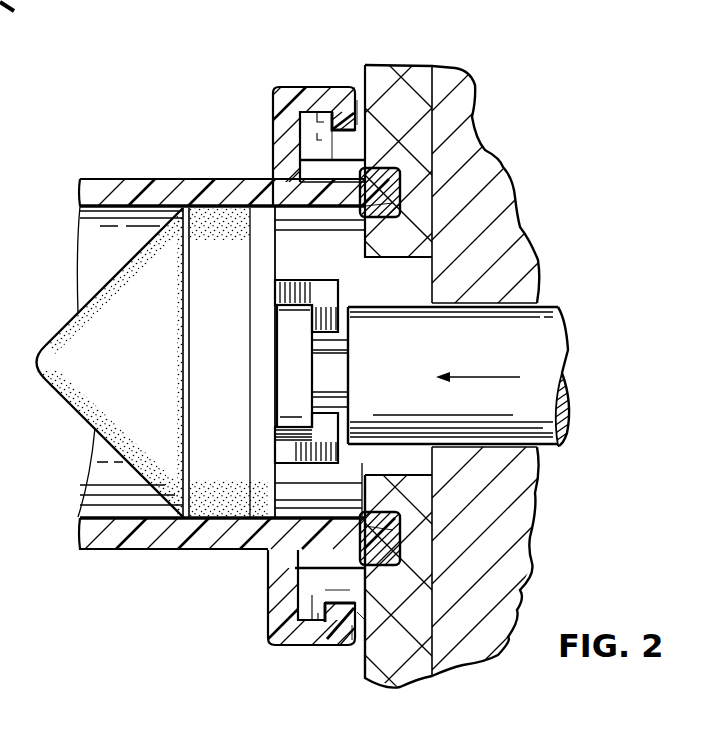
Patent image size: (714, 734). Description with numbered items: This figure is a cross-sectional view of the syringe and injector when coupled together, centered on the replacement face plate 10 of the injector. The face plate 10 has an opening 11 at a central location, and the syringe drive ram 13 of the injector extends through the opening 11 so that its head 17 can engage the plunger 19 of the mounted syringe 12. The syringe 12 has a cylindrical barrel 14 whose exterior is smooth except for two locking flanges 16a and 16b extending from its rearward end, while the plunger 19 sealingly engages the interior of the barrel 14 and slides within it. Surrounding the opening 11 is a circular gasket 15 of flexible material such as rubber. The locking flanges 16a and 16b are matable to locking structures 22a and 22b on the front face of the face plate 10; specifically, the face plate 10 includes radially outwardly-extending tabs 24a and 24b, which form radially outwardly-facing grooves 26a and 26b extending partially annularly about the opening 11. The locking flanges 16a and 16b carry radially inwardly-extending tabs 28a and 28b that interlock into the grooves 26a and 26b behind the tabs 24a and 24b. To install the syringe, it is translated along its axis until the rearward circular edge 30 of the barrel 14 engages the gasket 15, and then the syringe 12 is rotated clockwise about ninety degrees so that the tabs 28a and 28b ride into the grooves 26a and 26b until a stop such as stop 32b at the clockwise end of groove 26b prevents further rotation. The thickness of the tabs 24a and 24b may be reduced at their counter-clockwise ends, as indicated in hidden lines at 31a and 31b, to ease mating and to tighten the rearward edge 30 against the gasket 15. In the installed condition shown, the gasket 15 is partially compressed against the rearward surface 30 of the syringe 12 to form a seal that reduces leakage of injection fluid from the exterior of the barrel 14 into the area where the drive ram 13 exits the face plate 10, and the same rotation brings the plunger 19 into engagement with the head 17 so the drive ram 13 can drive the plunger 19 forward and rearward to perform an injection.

The face plate 10 is at (405, 60).
The opening 11 is at (407, 297).
The syringe 12 is at (112, 556).
The syringe drive ram 13 is at (416, 390).
The cylindrical barrel 14 is at (123, 186).
The gasket 15 is at (400, 183).
The locking flange 16a is at (273, 122).
The locking flange 16b is at (268, 620).
The head 17 is at (285, 383).
The plunger 19 is at (124, 369).
The locking structure 22a is at (346, 152).
The locking structure 22b is at (333, 578).
The tab 24a is at (273, 112).
The tab 24b is at (298, 594).
The groove 26a is at (357, 118).
The groove 26b is at (360, 632).
The tab 28a is at (342, 105).
The tab 28b is at (328, 622).
The rearward circular edge 30 is at (370, 210).
The reduced thickness 31a is at (317, 109).
The reduced thickness 31b is at (280, 636).
The stop 32b is at (357, 617).